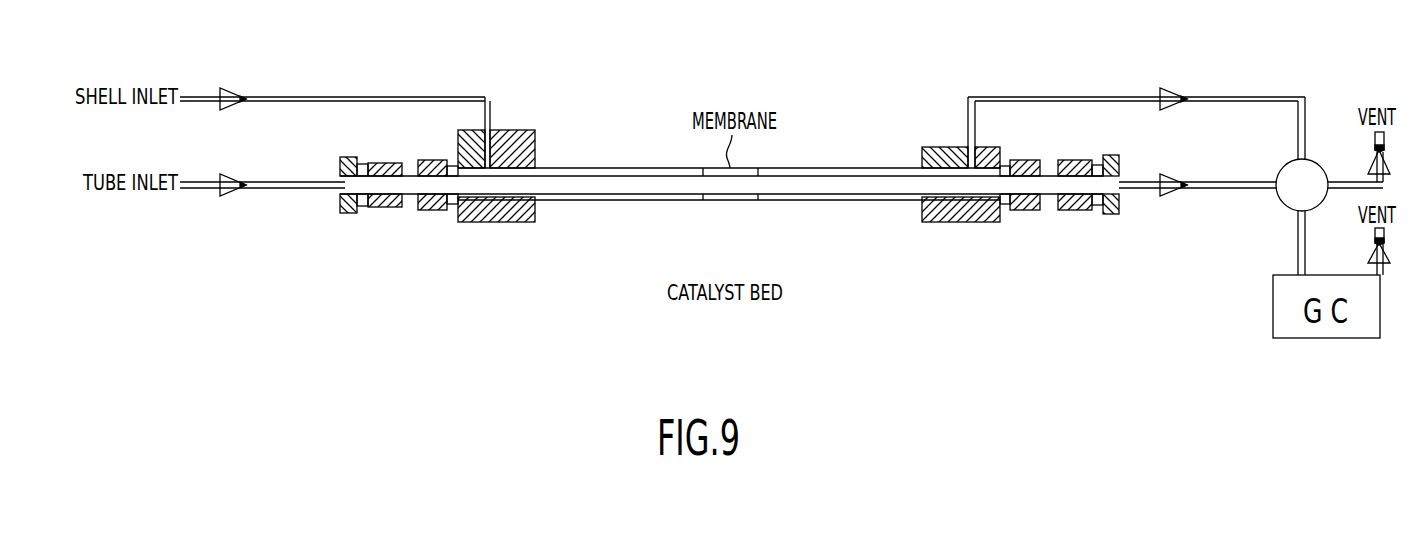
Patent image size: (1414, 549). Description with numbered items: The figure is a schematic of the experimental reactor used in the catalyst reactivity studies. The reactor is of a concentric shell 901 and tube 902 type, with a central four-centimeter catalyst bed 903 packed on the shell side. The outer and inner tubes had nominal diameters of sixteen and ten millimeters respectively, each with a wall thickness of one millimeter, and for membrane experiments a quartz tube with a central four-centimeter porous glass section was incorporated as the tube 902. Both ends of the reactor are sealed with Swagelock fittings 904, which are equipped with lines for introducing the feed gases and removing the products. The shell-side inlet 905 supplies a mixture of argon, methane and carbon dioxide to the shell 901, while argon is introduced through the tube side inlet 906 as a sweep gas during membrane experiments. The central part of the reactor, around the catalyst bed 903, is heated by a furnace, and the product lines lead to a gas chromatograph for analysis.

The shell 901 is at (835, 200).
The tube 902 is at (825, 168).
The catalyst bed 903 is at (735, 200).
The Swagelock fittings 904 is at (1027, 205).
The inlet 905 is at (383, 96).
The tube side inlet 906 is at (237, 190).